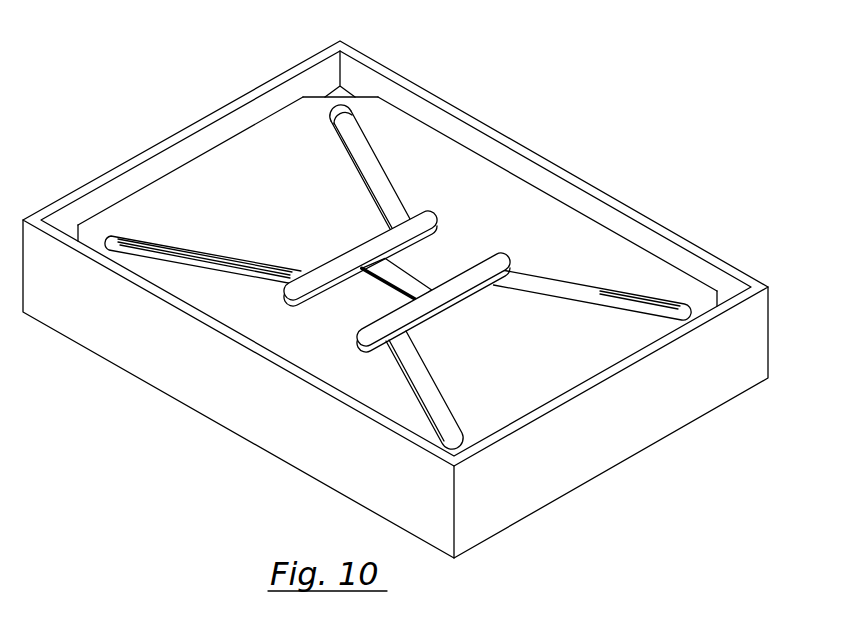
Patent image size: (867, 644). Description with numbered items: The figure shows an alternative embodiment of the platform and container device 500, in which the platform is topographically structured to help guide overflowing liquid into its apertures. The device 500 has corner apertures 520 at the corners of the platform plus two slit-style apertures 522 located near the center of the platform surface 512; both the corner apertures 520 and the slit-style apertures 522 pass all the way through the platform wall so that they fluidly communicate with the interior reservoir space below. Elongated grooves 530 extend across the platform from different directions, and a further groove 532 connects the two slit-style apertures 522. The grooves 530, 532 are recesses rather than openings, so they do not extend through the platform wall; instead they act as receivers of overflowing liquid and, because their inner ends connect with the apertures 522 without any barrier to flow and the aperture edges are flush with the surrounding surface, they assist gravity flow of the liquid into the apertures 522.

The device 500 is at (580, 137).
The floor of tray 512 is at (276, 196).
The corner apertures 520 is at (66, 222).
The slit-style apertures 522 is at (414, 226).
The grooves 530 is at (388, 198).
The groove 532 is at (399, 288).